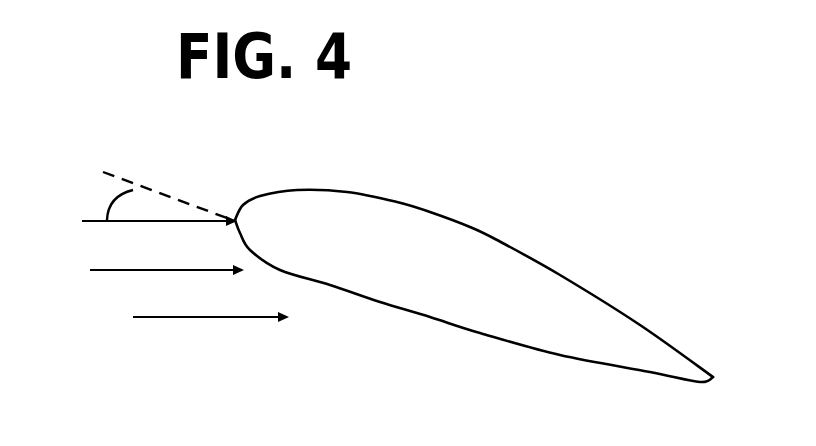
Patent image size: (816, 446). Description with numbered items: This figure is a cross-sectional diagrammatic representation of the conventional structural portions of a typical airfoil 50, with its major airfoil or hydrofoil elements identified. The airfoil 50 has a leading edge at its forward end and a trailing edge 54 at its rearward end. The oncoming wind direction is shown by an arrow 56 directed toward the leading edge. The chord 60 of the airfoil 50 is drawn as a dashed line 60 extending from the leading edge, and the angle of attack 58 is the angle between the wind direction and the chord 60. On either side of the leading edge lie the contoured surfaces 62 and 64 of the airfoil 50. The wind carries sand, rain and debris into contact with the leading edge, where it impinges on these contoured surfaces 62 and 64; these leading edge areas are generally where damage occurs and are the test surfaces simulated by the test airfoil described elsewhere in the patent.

The airfoil 50 is at (411, 346).
The trailing edge 54 is at (707, 363).
The arrow 56 is at (163, 273).
The angle of attack 58 is at (104, 203).
The chord 60 is at (110, 170).
The contoured surface 62 is at (250, 200).
The contoured surface 64 is at (250, 232).